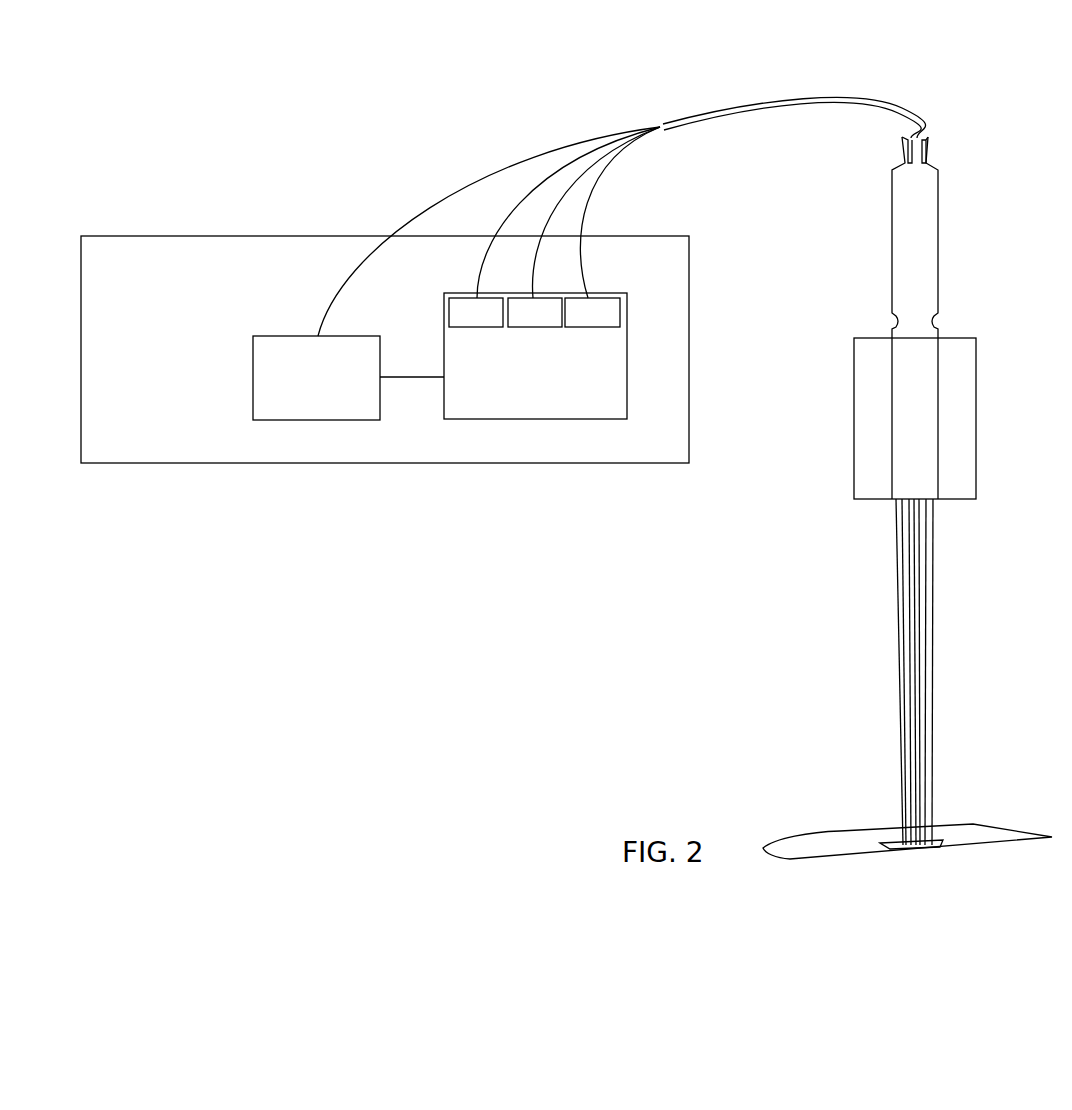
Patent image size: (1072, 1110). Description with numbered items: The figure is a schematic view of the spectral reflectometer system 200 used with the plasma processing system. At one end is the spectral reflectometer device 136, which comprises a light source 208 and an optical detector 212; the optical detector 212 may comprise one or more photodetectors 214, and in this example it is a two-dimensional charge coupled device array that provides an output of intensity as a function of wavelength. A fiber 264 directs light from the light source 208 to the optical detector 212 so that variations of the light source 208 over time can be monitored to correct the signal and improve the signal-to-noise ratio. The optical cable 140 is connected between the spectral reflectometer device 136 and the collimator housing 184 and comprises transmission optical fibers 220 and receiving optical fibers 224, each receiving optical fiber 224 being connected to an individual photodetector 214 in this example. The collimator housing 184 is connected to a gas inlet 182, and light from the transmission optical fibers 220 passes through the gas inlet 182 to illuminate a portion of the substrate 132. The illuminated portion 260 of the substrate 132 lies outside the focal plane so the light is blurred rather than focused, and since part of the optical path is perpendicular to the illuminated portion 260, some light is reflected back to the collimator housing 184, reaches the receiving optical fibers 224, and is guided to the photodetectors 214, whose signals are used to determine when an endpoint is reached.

The spectral reflectometer device 136 is at (385, 349).
The light source 208 is at (316, 376).
The optical detector 212 is at (535, 356).
The photodetectors 214 is at (534, 312).
The fiber 264 is at (403, 378).
The transmission optical fibers 220 is at (471, 193).
The receiving optical fibers 224 is at (600, 187).
The optical cable 140 is at (797, 100).
The spectral reflectometer system 200 is at (917, 449).
The collimator housing 184 is at (937, 230).
The gas inlet 182 is at (965, 385).
The illuminated portion 260 is at (932, 840).
The substrate 132 is at (1000, 830).